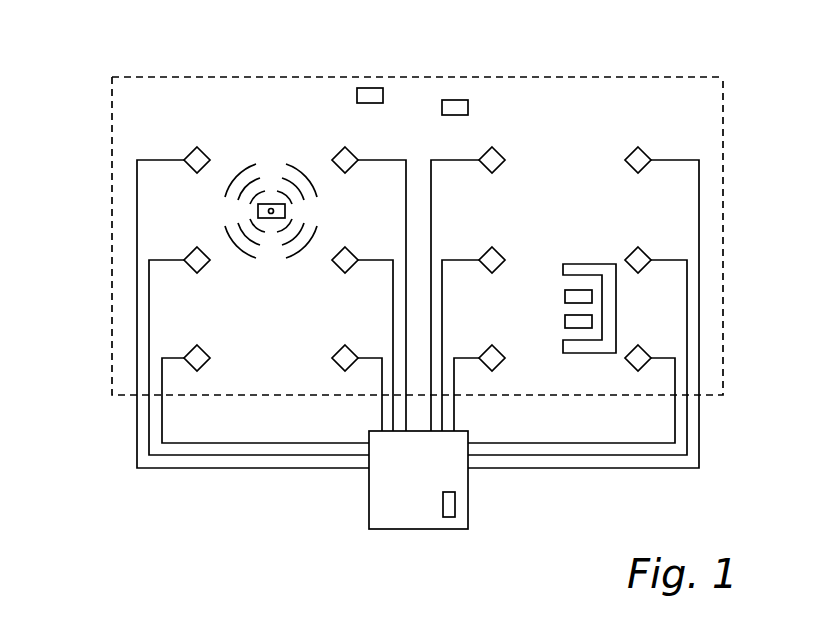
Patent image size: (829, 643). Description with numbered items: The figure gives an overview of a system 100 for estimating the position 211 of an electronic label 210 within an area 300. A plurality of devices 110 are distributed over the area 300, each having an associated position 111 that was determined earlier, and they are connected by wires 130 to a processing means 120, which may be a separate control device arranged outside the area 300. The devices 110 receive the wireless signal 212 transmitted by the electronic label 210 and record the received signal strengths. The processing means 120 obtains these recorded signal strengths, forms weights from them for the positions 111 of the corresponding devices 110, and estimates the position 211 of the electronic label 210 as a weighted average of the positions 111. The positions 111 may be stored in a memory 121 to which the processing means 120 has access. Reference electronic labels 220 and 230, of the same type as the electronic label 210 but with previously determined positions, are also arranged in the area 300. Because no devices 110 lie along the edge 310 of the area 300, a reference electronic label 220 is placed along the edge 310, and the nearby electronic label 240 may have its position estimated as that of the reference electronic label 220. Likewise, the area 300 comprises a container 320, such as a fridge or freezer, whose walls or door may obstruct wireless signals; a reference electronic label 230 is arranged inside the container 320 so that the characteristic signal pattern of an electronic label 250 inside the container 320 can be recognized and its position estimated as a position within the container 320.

The system 100 is at (96, 580).
The devices 110 is at (190, 155).
The positions 111 is at (195, 155).
The processing means 120 is at (408, 530).
The memory 121 is at (449, 518).
The wires 130 is at (137, 370).
The electronic label 210 is at (277, 204).
The position 211 is at (266, 204).
The wireless signal 212 is at (230, 213).
The reference electronic label 220 is at (370, 88).
The reference electronic label 230 is at (565, 320).
The electronic label 240 is at (454, 100).
The electronic label 250 is at (565, 290).
The area 300 is at (417, 236).
The edge 310 is at (313, 77).
The container 320 is at (603, 263).